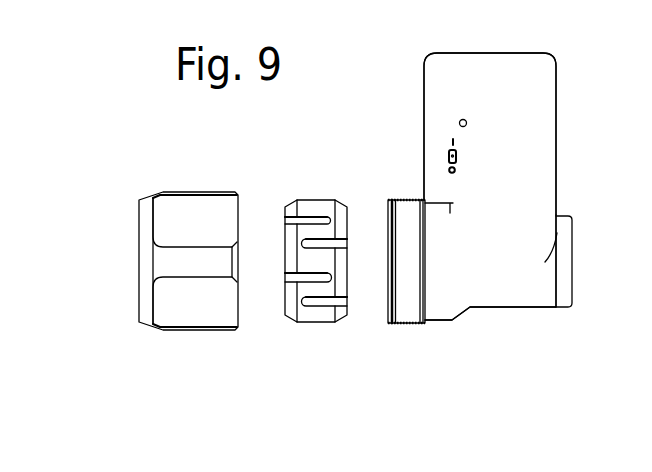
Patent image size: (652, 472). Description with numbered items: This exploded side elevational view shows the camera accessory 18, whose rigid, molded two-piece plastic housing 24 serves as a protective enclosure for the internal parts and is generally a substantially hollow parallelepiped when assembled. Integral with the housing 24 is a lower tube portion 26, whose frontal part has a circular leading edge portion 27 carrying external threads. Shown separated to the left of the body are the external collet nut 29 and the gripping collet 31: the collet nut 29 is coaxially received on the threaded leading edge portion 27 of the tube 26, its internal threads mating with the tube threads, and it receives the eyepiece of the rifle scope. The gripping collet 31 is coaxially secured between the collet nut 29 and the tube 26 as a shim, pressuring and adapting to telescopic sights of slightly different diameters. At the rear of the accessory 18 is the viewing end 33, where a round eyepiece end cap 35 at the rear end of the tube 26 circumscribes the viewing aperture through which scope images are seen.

The camera accessory 18 is at (385, 120).
The housing 24 is at (533, 150).
The lower tube portion 26 is at (487, 290).
The circular leading edge portion 27 is at (389, 318).
The collet nut 29 is at (195, 213).
The gripping collet 31 is at (313, 210).
The viewing end 33 is at (578, 238).
The eyepiece end cap 35 is at (565, 263).